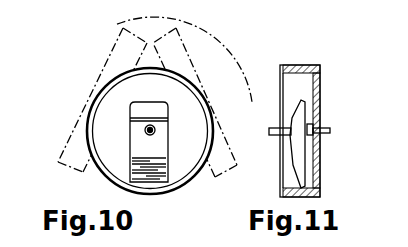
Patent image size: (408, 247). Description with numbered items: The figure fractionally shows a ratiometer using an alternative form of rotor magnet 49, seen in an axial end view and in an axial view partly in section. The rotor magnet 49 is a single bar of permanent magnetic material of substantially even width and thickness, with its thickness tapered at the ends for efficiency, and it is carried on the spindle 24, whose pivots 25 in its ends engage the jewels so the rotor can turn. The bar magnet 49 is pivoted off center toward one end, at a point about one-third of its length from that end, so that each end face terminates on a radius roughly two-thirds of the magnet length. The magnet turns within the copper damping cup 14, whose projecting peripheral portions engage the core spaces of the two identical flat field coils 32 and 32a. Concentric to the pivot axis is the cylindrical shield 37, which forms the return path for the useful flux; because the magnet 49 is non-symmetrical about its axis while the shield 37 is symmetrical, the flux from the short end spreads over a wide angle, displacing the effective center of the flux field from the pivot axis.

In FIG. 10, the damping cup 14 is at (188, 185).
In FIG. 11, the damping cup 14 is at (300, 131).
In FIG. 10, the spindle 24 is at (156, 130).
In FIG. 11, the spindle 24 is at (274, 127).
In FIG. 11, the pivots 25 is at (331, 129).
In FIG. 10, the field coil 32 is at (112, 54).
In FIG. 10, the field coil 32a is at (203, 43).
In FIG. 10, the shield member 37 is at (184, 23).
In FIG. 10, the rotor magnet 49 is at (140, 143).
In FIG. 11, the rotor magnet 49 is at (298, 155).